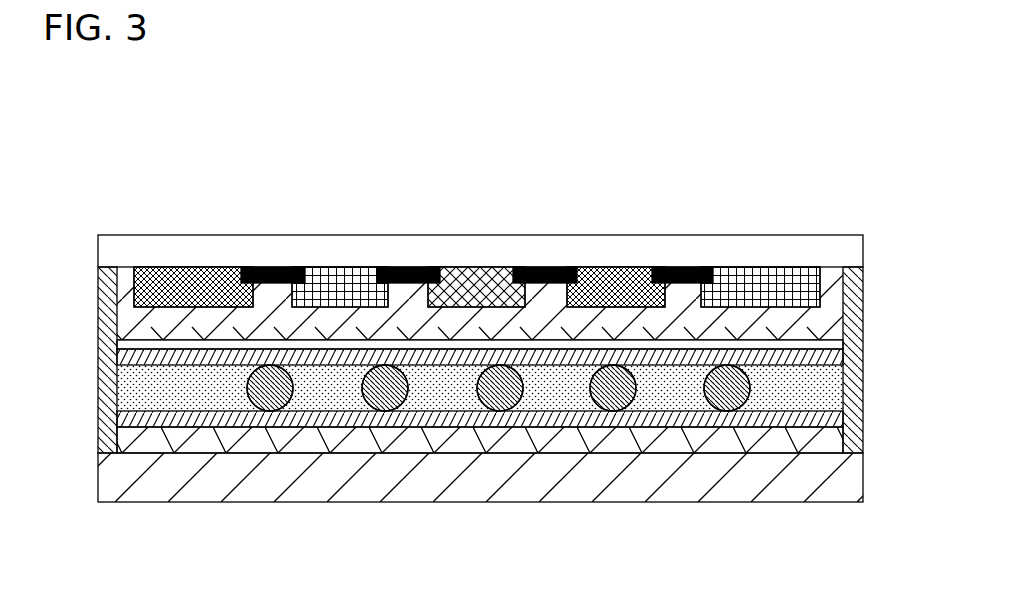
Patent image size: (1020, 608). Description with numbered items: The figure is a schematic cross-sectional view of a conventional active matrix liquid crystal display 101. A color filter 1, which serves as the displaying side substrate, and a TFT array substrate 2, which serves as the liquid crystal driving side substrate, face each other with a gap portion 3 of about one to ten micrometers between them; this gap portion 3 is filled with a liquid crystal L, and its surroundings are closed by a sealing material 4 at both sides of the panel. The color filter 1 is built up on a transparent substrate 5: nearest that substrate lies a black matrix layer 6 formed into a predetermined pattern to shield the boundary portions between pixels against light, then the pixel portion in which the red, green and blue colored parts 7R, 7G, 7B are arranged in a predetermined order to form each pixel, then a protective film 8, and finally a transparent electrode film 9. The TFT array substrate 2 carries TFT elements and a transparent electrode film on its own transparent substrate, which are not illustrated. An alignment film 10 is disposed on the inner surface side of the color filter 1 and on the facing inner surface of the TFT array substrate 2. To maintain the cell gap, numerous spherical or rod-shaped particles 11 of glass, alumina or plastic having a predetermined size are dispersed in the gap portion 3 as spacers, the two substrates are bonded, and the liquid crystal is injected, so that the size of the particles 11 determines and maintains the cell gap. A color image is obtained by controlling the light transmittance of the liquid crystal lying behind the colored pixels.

The liquid crystal display 101 is at (202, 236).
The color filter 1 is at (83, 345).
The TFT array substrate 2 is at (162, 445).
The gap portion 3 is at (330, 397).
The sealing material 4 is at (97, 385).
The transparent substrate 5 is at (866, 248).
The black matrix layer 6 is at (690, 267).
The red pixel portion 7R is at (332, 267).
The green pixel portion 7G is at (476, 267).
The blue pixel portion 7B is at (616, 267).
The protective film 8 is at (826, 315).
The transparent electrode film 9 is at (838, 343).
The alignment film 10 is at (826, 356).
The particles 11 is at (604, 412).